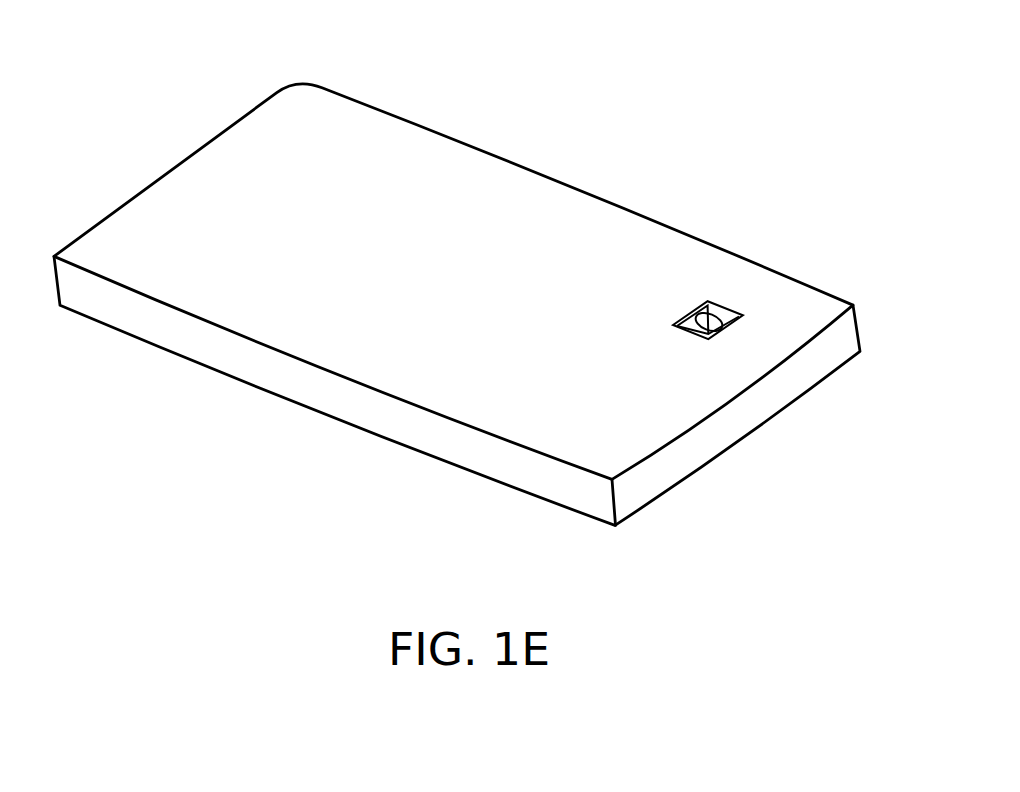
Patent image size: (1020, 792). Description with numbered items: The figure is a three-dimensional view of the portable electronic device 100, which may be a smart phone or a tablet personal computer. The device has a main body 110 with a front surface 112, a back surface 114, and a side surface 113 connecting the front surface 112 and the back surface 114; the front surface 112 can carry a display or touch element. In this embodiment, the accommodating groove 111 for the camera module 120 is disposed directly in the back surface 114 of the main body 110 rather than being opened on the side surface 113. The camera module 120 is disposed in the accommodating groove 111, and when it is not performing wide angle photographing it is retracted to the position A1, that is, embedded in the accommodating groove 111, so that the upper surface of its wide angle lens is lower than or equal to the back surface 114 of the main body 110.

The portable electronic device 100 is at (457, 315).
The main body 110 is at (457, 329).
The accommodating groove 111 is at (686, 322).
The front surface 112 is at (508, 487).
The side surface 113 is at (672, 462).
The back surface 114 is at (575, 252).
The camera module 120 is at (712, 303).
The position A1 is at (730, 299).